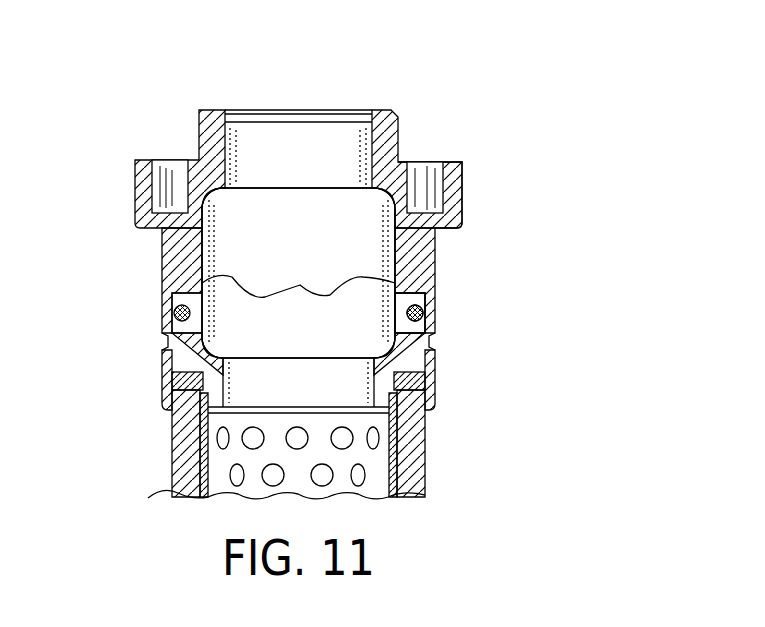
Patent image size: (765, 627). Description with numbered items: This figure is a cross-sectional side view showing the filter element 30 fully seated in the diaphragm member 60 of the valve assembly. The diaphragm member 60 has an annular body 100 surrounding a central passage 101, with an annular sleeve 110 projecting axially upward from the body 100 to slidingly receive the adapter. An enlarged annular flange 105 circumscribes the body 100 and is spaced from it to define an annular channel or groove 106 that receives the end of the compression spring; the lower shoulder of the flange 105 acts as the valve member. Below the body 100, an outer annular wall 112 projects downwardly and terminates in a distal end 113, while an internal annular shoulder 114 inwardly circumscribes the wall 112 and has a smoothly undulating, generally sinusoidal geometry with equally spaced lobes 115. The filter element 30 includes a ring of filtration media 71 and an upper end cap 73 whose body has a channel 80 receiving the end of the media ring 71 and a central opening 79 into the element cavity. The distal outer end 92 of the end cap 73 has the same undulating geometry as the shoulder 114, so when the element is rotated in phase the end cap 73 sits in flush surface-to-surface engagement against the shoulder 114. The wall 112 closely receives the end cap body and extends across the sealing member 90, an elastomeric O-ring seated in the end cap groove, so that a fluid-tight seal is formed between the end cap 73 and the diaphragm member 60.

The diaphragm member 60 is at (543, 70).
The annular sleeve 110 is at (343, 129).
The annular channel or groove 106 is at (420, 173).
The annular flange 105 is at (465, 173).
The annular body 100 is at (440, 233).
The outer annular wall 112 is at (178, 317).
The distal outer end 92 is at (438, 287).
The internal annular shoulder 114 is at (437, 303).
The sealing member 90 is at (437, 322).
The distal end 113 is at (435, 337).
The upper end cap 73 is at (437, 363).
The channel 80 is at (437, 402).
The ring of filtration media 71 is at (177, 480).
The filter element 30 is at (447, 483).
The central passage 101 is at (297, 226).
The central opening 79 is at (330, 337).
The lobes 115 is at (303, 290).